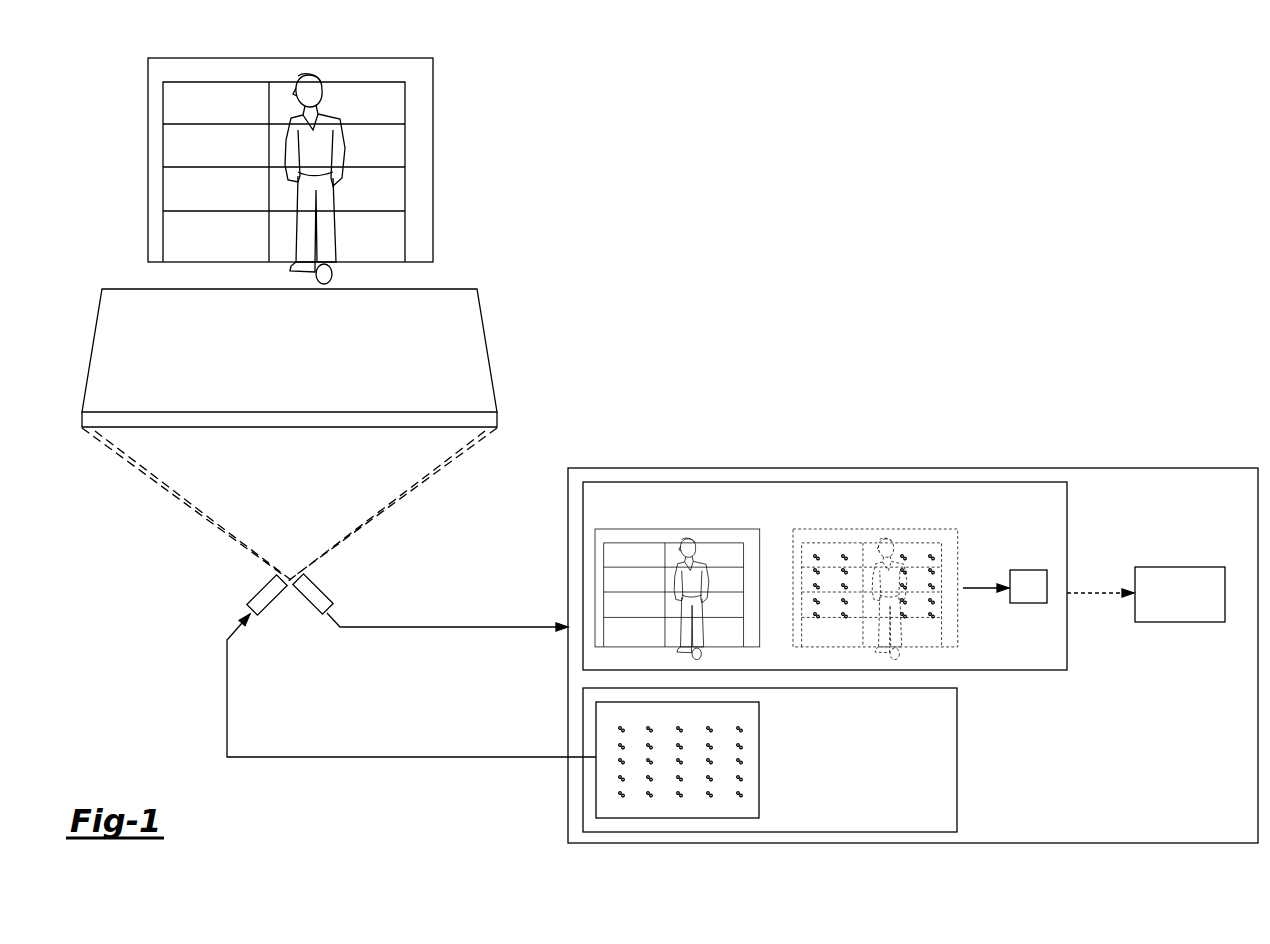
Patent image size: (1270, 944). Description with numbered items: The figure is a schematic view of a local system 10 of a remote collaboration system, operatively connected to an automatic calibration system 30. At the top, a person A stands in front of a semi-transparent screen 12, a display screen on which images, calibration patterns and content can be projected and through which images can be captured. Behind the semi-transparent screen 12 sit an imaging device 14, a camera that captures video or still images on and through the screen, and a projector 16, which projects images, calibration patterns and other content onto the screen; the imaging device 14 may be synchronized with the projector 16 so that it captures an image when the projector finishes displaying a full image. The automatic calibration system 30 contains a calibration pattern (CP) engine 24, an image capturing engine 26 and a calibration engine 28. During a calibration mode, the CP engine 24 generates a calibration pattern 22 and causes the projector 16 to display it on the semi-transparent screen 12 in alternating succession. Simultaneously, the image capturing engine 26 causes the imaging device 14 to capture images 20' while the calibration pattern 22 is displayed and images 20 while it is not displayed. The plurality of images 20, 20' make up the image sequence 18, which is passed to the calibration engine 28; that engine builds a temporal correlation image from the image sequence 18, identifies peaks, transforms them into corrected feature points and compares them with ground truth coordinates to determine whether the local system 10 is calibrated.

The local system 10 is at (1035, 123).
The object (person) in captured image A is at (340, 188).
The semi-transparent screen 12 is at (487, 337).
The imaging device 14 is at (323, 585).
The projector 16 is at (258, 587).
The image sequence 18 is at (1040, 598).
The image 20 is at (635, 594).
The image 20' is at (909, 592).
The calibration pattern 22 is at (759, 760).
The calibration pattern (CP) engine 24 is at (957, 760).
The image capturing engine 26 is at (1067, 650).
The calibration engine 28 is at (1180, 567).
The automatic calibration system 30 is at (1150, 468).